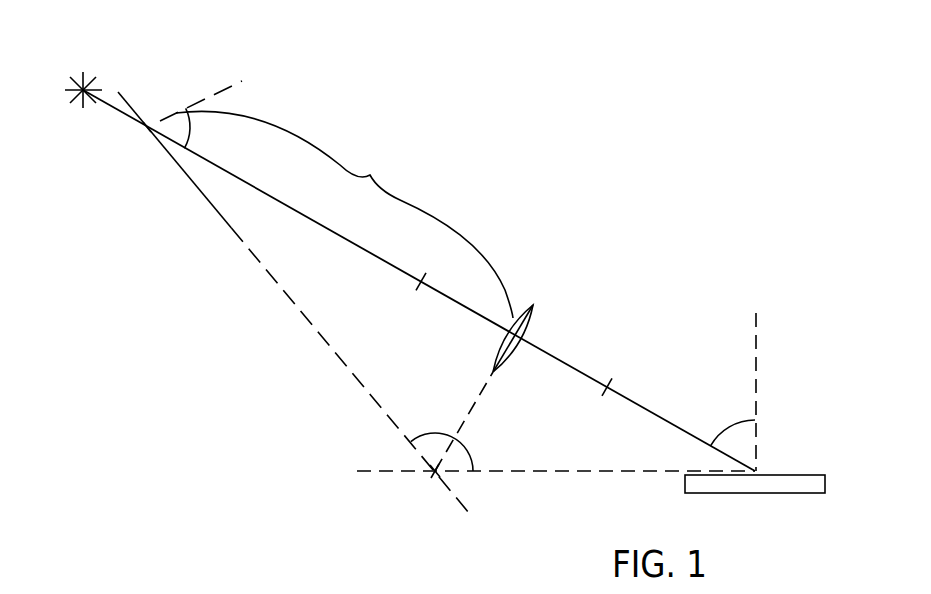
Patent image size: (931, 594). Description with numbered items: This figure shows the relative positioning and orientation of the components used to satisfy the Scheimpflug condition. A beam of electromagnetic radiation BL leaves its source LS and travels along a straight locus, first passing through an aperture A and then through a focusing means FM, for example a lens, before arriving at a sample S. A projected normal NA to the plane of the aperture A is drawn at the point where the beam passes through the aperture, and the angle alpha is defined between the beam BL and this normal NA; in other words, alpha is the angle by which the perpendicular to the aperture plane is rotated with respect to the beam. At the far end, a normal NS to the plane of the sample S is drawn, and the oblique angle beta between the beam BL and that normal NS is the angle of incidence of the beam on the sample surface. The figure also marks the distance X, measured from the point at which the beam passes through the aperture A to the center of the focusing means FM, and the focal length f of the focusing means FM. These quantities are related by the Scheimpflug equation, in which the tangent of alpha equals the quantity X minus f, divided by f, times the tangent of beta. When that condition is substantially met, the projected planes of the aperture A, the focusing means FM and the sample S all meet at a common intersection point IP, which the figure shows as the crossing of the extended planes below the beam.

The source of electromagnetic radiation LS is at (133, 72).
The beam of electromagnetic radiation BL is at (401, 280).
The aperture A is at (283, 304).
The aperture hole AH is at (98, 163).
The projected normal to the plane of the aperture NA is at (228, 90).
The distance from the aperture to the center of the focusing means X is at (344, 214).
The focal length of the focusing means f is at (544, 317).
The focusing means FM is at (537, 382).
The intersection point IP is at (538, 489).
The normal to the plane of the sample NS is at (809, 392).
The sample S is at (767, 504).